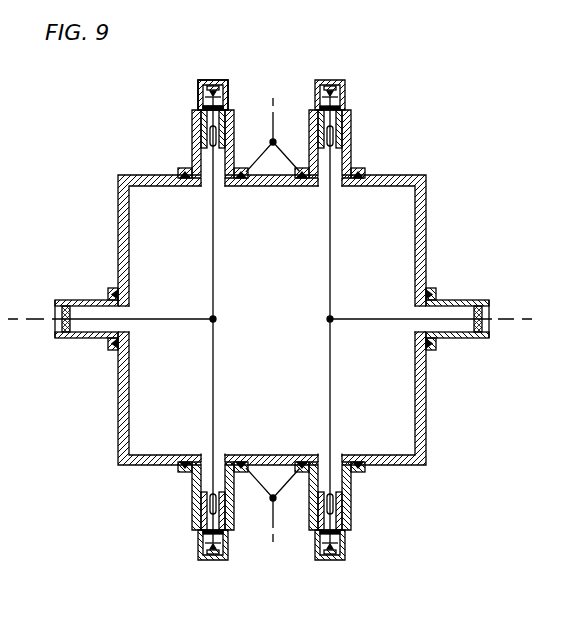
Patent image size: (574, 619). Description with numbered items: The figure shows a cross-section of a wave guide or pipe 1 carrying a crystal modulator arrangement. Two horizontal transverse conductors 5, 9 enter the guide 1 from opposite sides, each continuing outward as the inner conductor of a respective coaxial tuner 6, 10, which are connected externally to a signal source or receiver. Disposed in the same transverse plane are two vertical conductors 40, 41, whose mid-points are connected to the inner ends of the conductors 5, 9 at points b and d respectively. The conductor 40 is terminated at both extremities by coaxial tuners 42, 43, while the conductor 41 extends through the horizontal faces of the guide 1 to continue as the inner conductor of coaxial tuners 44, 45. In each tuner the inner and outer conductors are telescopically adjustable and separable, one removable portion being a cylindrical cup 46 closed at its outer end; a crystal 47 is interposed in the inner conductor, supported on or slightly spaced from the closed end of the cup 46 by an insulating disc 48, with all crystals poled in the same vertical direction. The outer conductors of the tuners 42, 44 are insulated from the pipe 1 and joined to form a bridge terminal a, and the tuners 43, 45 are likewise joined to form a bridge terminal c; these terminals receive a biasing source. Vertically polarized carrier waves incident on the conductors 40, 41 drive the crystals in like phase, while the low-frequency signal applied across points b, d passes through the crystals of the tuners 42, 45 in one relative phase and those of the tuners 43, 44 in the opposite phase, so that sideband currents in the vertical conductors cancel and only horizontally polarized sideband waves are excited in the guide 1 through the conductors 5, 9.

The guide 1 is at (427, 232).
The horizontal transverse conductor 5 is at (162, 318).
The coaxial tuner 6 is at (81, 299).
The horizontal transverse conductor 9 is at (390, 318).
The coaxial tuner 10 is at (477, 299).
The vertical conductor 40 is at (214, 230).
The vertical conductor 41 is at (331, 228).
The coaxial conductor tuner 42 is at (216, 164).
The coaxial conductor tuner 43 is at (221, 486).
The coaxial tuner 44 is at (336, 162).
The coaxial tuner 45 is at (337, 489).
The cylindrical cup 46 is at (197, 97).
The crystal 47 is at (231, 82).
The insulating disc 48 is at (229, 103).
The bridge terminal a is at (273, 135).
The connection point b is at (219, 317).
The bridge terminal c is at (273, 505).
The connection point d is at (320, 317).